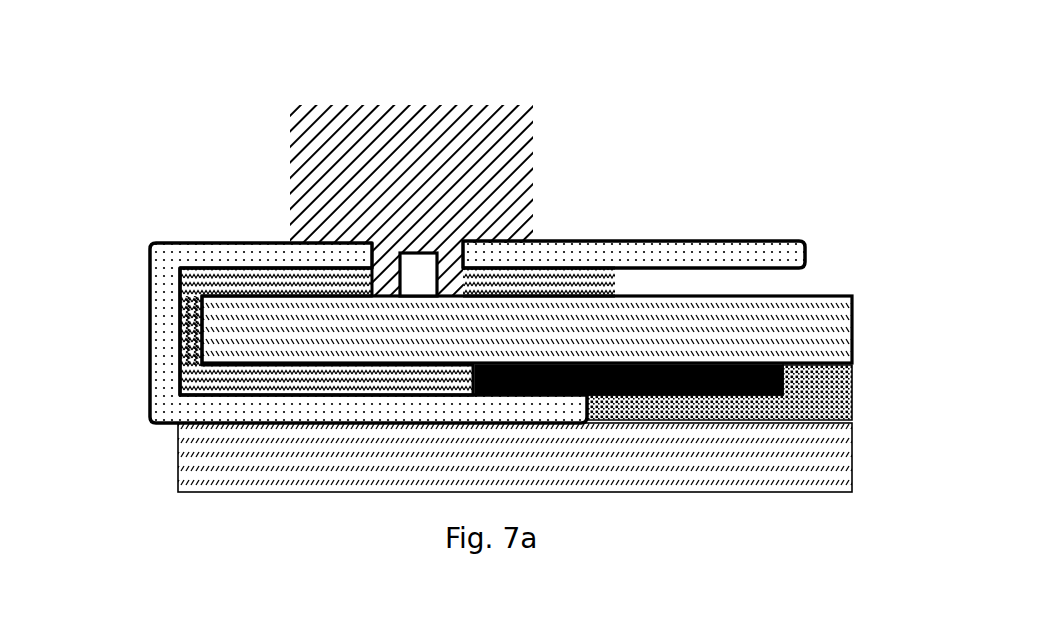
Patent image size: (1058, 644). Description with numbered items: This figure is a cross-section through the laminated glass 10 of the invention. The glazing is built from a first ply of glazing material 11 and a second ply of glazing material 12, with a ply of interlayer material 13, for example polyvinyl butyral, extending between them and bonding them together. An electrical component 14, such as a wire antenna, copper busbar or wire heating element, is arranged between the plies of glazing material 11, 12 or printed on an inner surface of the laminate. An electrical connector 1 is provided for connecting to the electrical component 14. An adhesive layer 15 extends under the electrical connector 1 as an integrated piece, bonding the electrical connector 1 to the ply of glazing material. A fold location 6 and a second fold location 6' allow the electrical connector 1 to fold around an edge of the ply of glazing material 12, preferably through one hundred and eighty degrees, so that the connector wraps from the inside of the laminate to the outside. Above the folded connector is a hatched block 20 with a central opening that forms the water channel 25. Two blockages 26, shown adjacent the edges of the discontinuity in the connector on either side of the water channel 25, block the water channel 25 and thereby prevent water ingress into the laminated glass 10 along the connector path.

The laminated glass 10 is at (146, 138).
The first ply of glazing material 11 is at (178, 457).
The second ply of glazing material 12 is at (853, 331).
The ply of interlayer material 13 is at (853, 393).
The electrical component 14 is at (790, 397).
The adhesive layer 15 is at (615, 283).
The fold location 6 is at (316, 333).
The second fold location 6' is at (207, 247).
The electrical connector 1 is at (807, 253).
The reflective block 20 is at (410, 103).
The water channel 25 is at (417, 253).
The blockages 26 is at (378, 242).